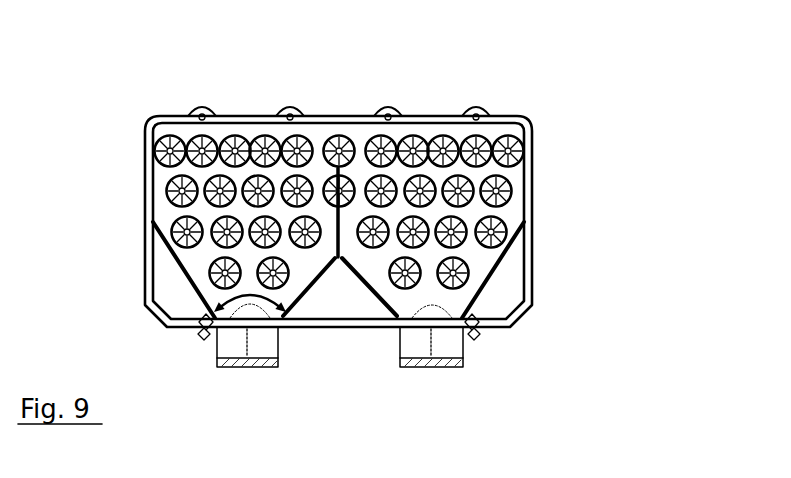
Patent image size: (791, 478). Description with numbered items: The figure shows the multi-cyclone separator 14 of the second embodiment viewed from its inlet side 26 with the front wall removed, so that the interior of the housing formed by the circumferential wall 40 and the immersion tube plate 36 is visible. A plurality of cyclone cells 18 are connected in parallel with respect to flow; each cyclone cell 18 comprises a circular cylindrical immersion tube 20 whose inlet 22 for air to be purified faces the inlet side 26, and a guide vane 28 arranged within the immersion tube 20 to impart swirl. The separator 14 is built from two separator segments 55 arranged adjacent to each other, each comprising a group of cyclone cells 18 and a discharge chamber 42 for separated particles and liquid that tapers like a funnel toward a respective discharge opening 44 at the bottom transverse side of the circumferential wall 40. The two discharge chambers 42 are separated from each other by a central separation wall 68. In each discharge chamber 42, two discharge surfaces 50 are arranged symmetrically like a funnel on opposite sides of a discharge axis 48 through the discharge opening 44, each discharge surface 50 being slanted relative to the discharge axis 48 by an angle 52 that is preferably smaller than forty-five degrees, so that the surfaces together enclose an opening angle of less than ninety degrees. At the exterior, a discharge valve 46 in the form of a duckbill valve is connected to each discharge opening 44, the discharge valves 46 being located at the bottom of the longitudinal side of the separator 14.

The multi-cyclone separator 14 is at (503, 100).
The cyclone cell 18 is at (514, 118).
The immersion tube 20 is at (506, 187).
The inlet 22 is at (504, 229).
The inlet side 26 is at (188, 122).
The guide vane 28 is at (379, 128).
The immersion tube plate 36 is at (157, 212).
The circumferential wall 40 is at (430, 115).
The discharge chamber 42 is at (160, 177).
The discharge opening 44 is at (22, 0).
The discharge valve 46 is at (447, 350).
The discharge axis 48 is at (248, 352).
The discharge surface 50 is at (182, 263).
The angle 52 is at (228, 316).
The separator segment 55 is at (251, 126).
The separation wall 68 is at (339, 258).